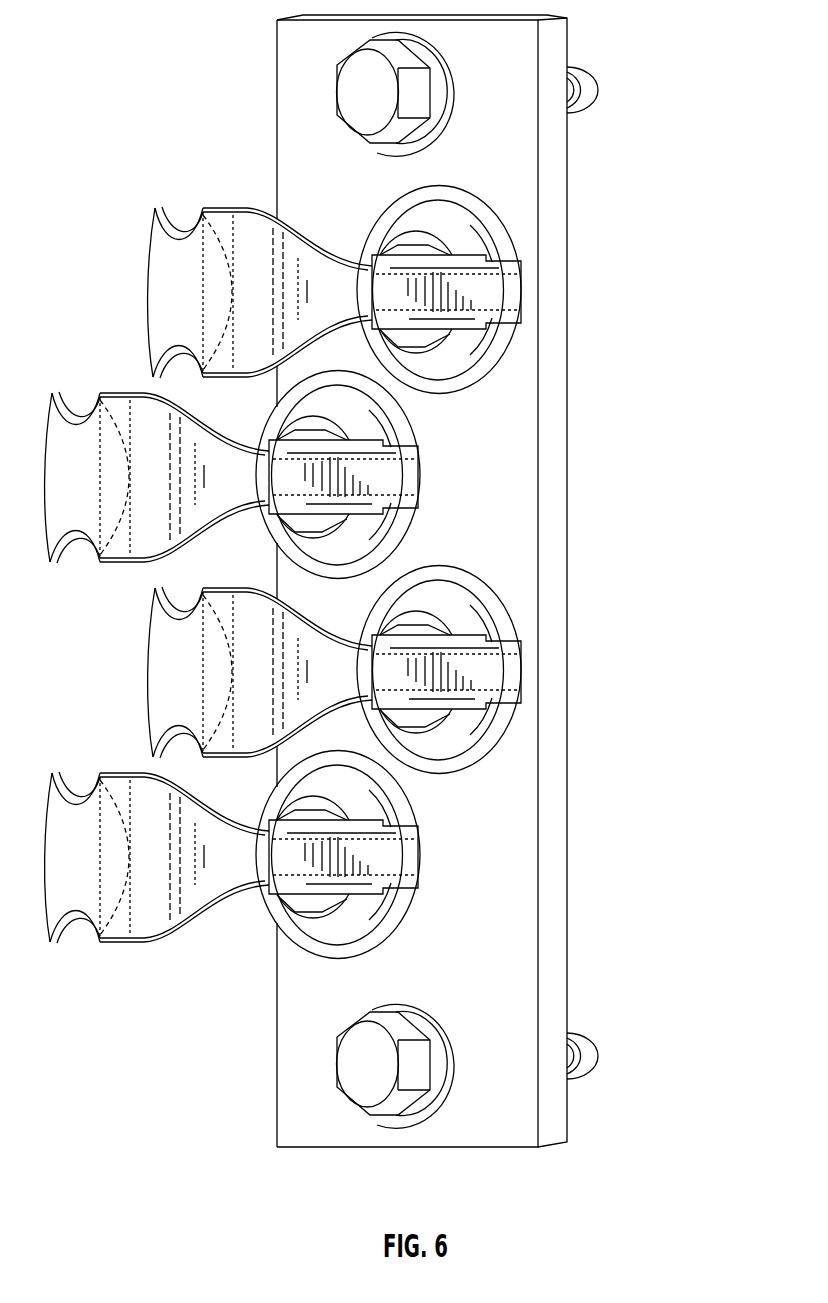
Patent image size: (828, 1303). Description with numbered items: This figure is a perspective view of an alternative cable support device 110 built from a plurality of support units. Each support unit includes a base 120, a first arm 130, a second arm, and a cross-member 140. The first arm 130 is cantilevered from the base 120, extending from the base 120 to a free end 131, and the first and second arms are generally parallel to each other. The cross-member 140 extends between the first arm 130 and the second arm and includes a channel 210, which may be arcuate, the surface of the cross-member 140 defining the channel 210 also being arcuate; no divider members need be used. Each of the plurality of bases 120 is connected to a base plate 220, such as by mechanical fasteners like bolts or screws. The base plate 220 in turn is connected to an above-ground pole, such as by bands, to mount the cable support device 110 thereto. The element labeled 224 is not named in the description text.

The cable support device 110 is at (632, 130).
The base 120 is at (500, 245).
The first arm 130 is at (503, 295).
The free end 131 is at (275, 255).
The cross-member 140 is at (236, 259).
The channel 210 is at (183, 212).
The base plate 220 is at (515, 217).
The bolt 224 is at (330, 91).